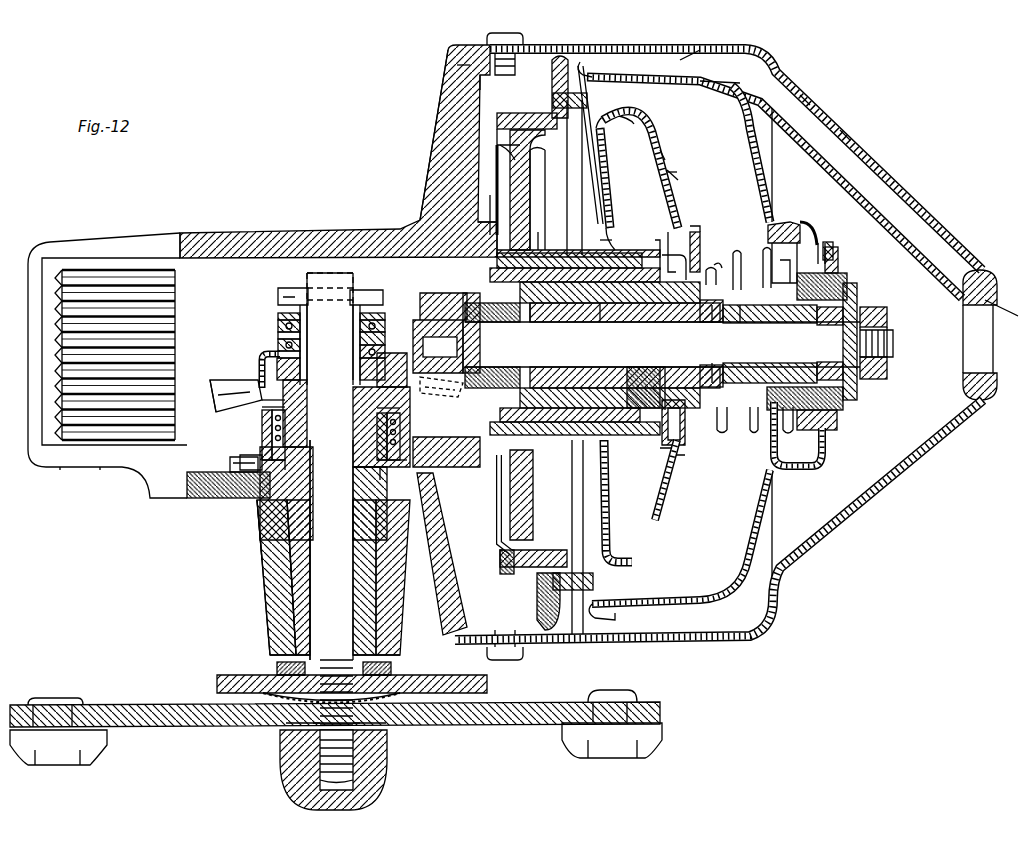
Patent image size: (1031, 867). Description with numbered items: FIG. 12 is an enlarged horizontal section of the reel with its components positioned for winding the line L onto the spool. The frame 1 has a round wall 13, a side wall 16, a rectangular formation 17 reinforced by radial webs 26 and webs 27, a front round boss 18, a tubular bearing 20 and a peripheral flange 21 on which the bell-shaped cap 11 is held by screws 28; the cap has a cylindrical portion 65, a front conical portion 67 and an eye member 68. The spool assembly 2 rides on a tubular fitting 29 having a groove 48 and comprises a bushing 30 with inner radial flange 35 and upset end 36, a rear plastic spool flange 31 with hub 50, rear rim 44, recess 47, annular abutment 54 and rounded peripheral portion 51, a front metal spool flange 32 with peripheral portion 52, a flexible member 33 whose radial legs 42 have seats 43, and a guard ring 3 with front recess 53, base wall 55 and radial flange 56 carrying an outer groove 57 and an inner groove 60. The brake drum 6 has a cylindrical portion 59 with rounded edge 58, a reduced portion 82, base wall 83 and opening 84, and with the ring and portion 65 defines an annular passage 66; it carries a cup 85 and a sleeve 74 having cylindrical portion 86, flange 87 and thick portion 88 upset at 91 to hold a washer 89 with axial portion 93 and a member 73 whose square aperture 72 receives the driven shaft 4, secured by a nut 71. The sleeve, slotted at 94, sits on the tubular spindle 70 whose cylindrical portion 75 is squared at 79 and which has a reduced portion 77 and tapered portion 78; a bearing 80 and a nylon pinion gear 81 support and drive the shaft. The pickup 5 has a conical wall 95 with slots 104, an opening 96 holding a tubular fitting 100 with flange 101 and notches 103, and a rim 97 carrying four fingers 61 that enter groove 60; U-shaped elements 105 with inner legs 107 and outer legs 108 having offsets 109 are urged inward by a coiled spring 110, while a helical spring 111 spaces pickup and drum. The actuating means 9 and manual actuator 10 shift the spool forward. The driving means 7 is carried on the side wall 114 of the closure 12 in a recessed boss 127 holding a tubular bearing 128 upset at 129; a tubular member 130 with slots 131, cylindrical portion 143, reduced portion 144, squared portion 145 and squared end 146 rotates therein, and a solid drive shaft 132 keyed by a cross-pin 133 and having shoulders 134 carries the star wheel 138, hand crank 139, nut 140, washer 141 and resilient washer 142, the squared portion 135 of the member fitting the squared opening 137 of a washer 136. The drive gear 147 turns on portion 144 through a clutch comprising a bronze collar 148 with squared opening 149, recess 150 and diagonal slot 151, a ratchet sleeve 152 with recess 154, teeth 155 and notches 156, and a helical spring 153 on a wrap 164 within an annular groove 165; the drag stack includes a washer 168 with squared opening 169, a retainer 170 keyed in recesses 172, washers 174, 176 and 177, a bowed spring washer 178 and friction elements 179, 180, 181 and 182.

The housing 1 is at (280, 232).
The cup member 2 is at (650, 143).
The pinion 3 is at (532, 603).
The main shaft 4 is at (490, 366).
The shell 5 is at (668, 172).
The shell wall 6 is at (723, 131).
The spindle 7 is at (257, 595).
The motor fins 9 is at (62, 320).
The motor 10 is at (122, 290).
The arm 11 is at (838, 150).
The motor housing 12 is at (58, 470).
The head wall 13 is at (437, 122).
The housing top wall 16 is at (160, 236).
The plate 17 is at (478, 265).
The plate 18 is at (478, 282).
The sleeve 20 is at (565, 322).
The wall 21 is at (478, 72).
The wall portion 26 is at (455, 95).
The lower housing wall 27 is at (455, 570).
The cap 28 is at (487, 38).
The sleeve 29 is at (598, 322).
The sleeve 30 is at (606, 367).
The cup wall 31 is at (532, 178).
The cup wall 32 is at (615, 180).
The cup bottom 33 is at (538, 232).
The flange 35 is at (488, 222).
The cup bottom 36 is at (615, 212).
The wall 42 is at (488, 215).
The thin wall 43 is at (495, 165).
The block 44 is at (505, 573).
The lower cup wall 47 is at (548, 470).
The sleeve 48 is at (640, 400).
The plate 50 is at (575, 250).
The cup 51 is at (535, 142).
The cup wall 52 is at (620, 140).
The plate 53 is at (510, 113).
The flange 54 is at (505, 145).
The flange 55 is at (497, 133).
The post 56 is at (550, 80).
The rod 57 is at (567, 98).
The hook 58 is at (590, 62).
The plate 59 is at (672, 88).
The plate 60 is at (553, 100).
The wire 61 is at (585, 62).
The cover 65 is at (655, 50).
The cover plate 66 is at (690, 52).
The arm wall 67 is at (805, 128).
The arm end 68 is at (996, 292).
The collar 70 is at (535, 322).
The nut 71 is at (880, 310).
The threaded end 72 is at (855, 335).
The plate 73 is at (857, 292).
The sleeve 74 is at (800, 323).
The sleeve 75 is at (648, 303).
The collar 77 is at (752, 370).
The sleeve 78 is at (778, 364).
The collar 79 is at (712, 322).
The hub 80 is at (505, 322).
The hub 81 is at (440, 305).
The bracket 82 is at (780, 222).
The strip 83 is at (820, 240).
The rod 84 is at (830, 240).
The cap 85 is at (790, 226).
The sleeve 86 is at (772, 323).
The cavity 87 is at (784, 263).
The block 88 is at (840, 275).
The block 89 is at (840, 248).
The block 91 is at (843, 405).
The block 93 is at (838, 425).
The pins 94 is at (742, 290).
The shell 95 is at (663, 160).
The collar 96 is at (665, 303).
The flange 97 is at (600, 582).
The pin 100 is at (720, 262).
The bracket 101 is at (690, 252).
The bracket 103 is at (668, 425).
The strip 104 is at (684, 225).
The strip 105 is at (690, 240).
The collar 107 is at (688, 303).
The bracket 108 is at (690, 230).
The strip 109 is at (660, 232).
The strip 110 is at (672, 478).
The cover 111 is at (800, 468).
The foot 114 is at (118, 468).
The base block 127 is at (160, 495).
The spindle wall 128 is at (266, 570).
The block 129 is at (232, 464).
The spindle wall 130 is at (292, 545).
The cap 131 is at (365, 288).
The spindle wall 132 is at (300, 517).
The cap 133 is at (298, 288).
The washer 134 is at (838, 350).
The spindle end 135 is at (282, 660).
The washer 136 is at (277, 665).
The threaded stem 137 is at (362, 662).
The plate 138 is at (217, 684).
The base plate 139 is at (520, 725).
The nut 140 is at (385, 783).
The washer 141 is at (385, 740).
The washer 142 is at (275, 720).
The bore 143 is at (380, 575).
The hub 144 is at (307, 406).
The hub 145 is at (300, 474).
The hub 146 is at (310, 384).
The lever 147 is at (212, 390).
The hub 148 is at (308, 491).
The ring 149 is at (353, 459).
The ring 150 is at (308, 446).
The block 151 is at (252, 455).
The bearing 152 is at (266, 430).
The ring 153 is at (400, 430).
The ring 154 is at (400, 445).
The block 155 is at (430, 467).
The bearing 156 is at (400, 418).
The bearing 164 is at (290, 426).
The ring 165 is at (262, 412).
The strip 168 is at (262, 372).
The block 169 is at (395, 350).
The bearing 170 is at (278, 355).
The lever 172 is at (226, 375).
The bearing 174 is at (278, 332).
The bearing 176 is at (278, 343).
The bearing 177 is at (278, 322).
The ring 178 is at (278, 312).
The ring 179 is at (300, 365).
The ring 180 is at (307, 354).
The ring 181 is at (307, 339).
The ring 182 is at (307, 324).
The lower arm wall L is at (850, 190).